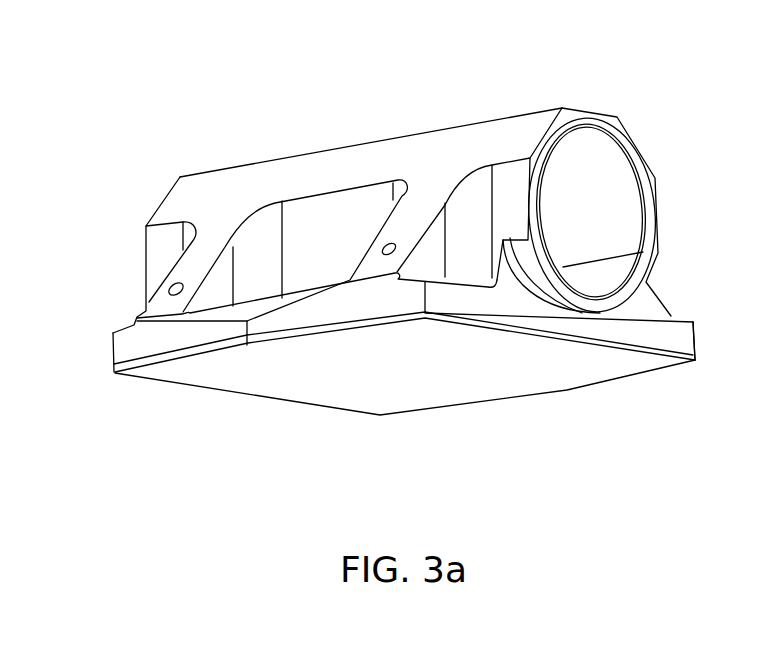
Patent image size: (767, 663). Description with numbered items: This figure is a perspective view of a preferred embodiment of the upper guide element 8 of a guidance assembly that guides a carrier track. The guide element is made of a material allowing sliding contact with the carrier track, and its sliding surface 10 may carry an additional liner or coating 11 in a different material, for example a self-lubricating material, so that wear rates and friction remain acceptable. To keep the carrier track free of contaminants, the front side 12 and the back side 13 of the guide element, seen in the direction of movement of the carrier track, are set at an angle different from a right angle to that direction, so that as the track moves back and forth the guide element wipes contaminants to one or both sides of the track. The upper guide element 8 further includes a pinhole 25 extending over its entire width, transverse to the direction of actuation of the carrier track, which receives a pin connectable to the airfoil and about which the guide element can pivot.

The upper guide element 8 is at (150, 163).
The pinhole 25 is at (609, 180).
The front side 12 is at (162, 340).
The liner or coating 11 is at (663, 353).
The sliding surface 10 is at (436, 380).
The back side 13 is at (696, 338).